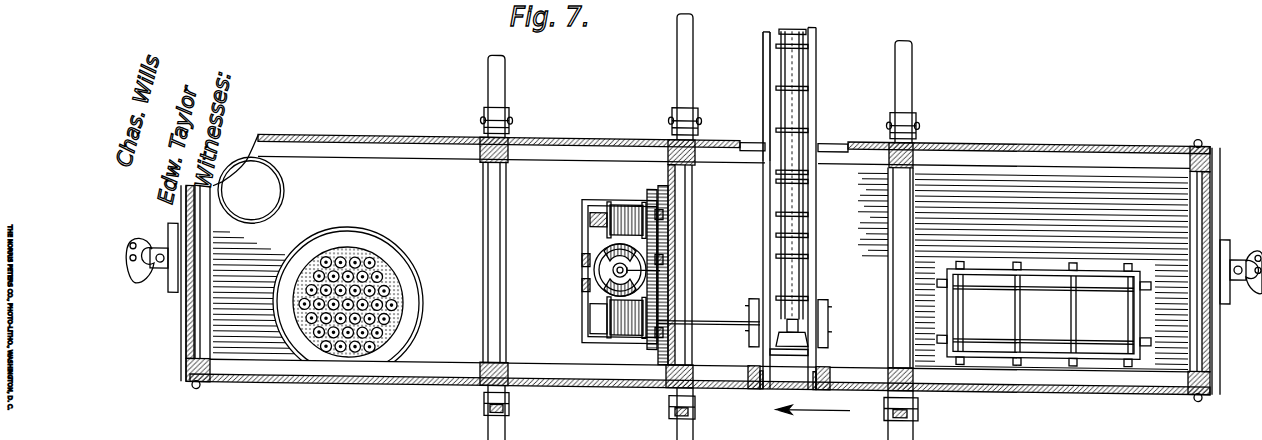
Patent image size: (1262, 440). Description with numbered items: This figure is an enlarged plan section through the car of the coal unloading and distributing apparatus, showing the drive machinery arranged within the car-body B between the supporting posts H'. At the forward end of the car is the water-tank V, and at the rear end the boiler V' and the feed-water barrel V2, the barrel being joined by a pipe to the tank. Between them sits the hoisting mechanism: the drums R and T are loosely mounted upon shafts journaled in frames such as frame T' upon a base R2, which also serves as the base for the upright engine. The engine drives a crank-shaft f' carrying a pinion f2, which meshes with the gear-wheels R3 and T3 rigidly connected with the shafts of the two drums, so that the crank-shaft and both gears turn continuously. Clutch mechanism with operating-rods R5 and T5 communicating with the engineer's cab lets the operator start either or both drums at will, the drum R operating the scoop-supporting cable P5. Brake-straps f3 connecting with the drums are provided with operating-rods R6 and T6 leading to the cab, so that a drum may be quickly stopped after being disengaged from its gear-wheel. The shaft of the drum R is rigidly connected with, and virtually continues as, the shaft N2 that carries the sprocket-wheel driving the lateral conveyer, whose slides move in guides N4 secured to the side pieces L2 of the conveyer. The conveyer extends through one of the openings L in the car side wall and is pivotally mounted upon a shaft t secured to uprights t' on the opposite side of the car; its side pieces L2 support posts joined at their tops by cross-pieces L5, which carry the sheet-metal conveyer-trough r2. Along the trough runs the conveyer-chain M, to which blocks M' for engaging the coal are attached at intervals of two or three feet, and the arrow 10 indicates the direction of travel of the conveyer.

The casing or box B is at (360, 149).
The supporting posts H' is at (698, 223).
The feed-water barrel V2 is at (284, 197).
The boiler V' is at (362, 302).
The base R2 is at (582, 226).
The frame T' is at (626, 210).
The operating-rod T5 is at (595, 214).
The operating-rod T6 is at (586, 262).
The operating-rod R6 is at (586, 287).
The drum R is at (626, 339).
The scoop-supporting cable P5 is at (592, 312).
The operating-rod R5 is at (598, 343).
The pinion f2 is at (660, 293).
The brake-straps f3 is at (645, 400).
The crank-shaft f' is at (684, 250).
The gear-wheel T3 is at (672, 218).
The gear-wheel R3 is at (668, 336).
The shaft N2 is at (726, 321).
The openings L is at (794, 217).
The cross-pieces L5 is at (816, 268).
The conveyer-chain M is at (767, 289).
The blocks M' is at (818, 195).
The conveyer-trough r2 is at (804, 234).
The guides N4 is at (830, 311).
The shaft t is at (778, 387).
The uprights t' is at (807, 341).
The side pieces L2 is at (794, 97).
The direction arrow 10 is at (813, 419).
The water-tank V is at (1044, 314).